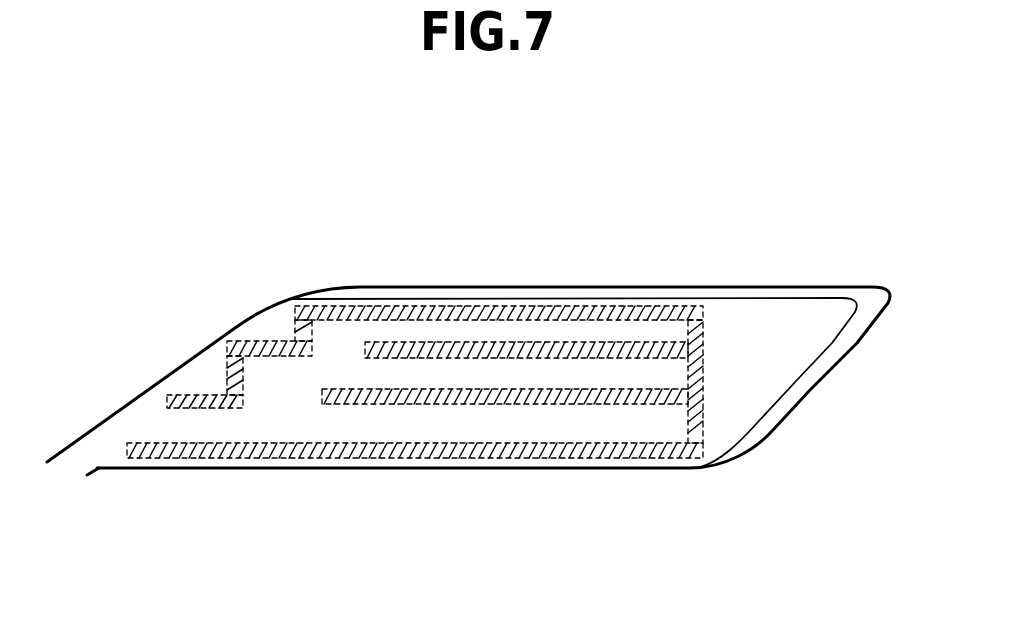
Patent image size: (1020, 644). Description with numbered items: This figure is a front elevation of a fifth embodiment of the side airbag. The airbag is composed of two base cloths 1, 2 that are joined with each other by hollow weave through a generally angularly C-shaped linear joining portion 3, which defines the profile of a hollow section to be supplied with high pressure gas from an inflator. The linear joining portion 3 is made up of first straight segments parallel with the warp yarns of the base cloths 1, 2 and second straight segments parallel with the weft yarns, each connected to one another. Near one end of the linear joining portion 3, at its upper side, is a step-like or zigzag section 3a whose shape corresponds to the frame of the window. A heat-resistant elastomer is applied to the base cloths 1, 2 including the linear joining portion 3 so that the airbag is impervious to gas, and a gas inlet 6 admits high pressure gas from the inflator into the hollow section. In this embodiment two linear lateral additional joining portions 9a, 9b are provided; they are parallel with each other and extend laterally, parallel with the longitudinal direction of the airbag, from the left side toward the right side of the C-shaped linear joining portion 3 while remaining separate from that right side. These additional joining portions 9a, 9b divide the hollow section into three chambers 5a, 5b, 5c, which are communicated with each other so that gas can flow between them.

The base cloth 1 is at (785, 298).
The base cloth 2 is at (687, 286).
The linear joining portion 3 is at (703, 393).
The step-like section 3a is at (261, 341).
The chamber 5a is at (275, 420).
The chamber 5b is at (427, 377).
The chamber 5c is at (574, 330).
The gas inlet 6 is at (75, 462).
The linear additional joining portion 9a is at (361, 403).
The linear additional joining portion 9b is at (493, 353).